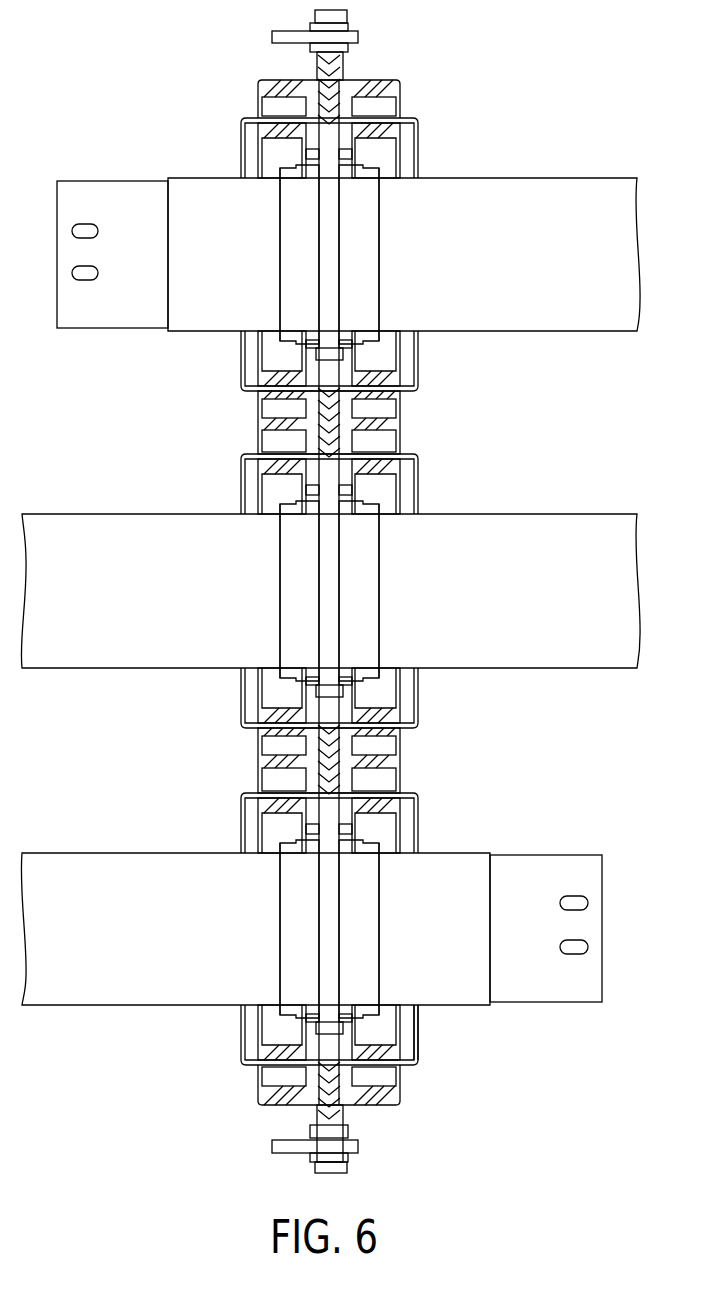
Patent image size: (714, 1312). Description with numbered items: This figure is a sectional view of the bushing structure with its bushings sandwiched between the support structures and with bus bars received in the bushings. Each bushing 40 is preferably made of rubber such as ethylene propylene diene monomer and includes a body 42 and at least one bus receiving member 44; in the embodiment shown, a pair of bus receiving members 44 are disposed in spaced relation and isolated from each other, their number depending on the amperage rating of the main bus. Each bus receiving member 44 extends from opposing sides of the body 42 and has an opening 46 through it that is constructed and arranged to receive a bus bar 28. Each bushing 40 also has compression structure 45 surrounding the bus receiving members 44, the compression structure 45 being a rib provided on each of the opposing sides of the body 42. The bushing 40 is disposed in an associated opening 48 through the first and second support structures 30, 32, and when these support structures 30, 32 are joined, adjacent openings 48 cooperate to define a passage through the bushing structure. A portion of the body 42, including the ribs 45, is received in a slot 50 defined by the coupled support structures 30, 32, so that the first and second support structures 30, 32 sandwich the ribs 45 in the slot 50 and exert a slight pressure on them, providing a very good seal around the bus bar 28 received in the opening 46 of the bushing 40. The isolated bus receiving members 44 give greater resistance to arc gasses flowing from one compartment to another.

The bus bar 28 is at (210, 261).
The first support structure 30 is at (242, 1042).
The second support structure 32 is at (418, 1050).
The bushing 40 is at (349, 583).
The body 42 is at (328, 343).
The bus receiving member 44 is at (372, 298).
The compression structure 45 is at (337, 490).
The opening 46 is at (380, 242).
The opening 48 is at (277, 352).
The slot 50 is at (352, 112).